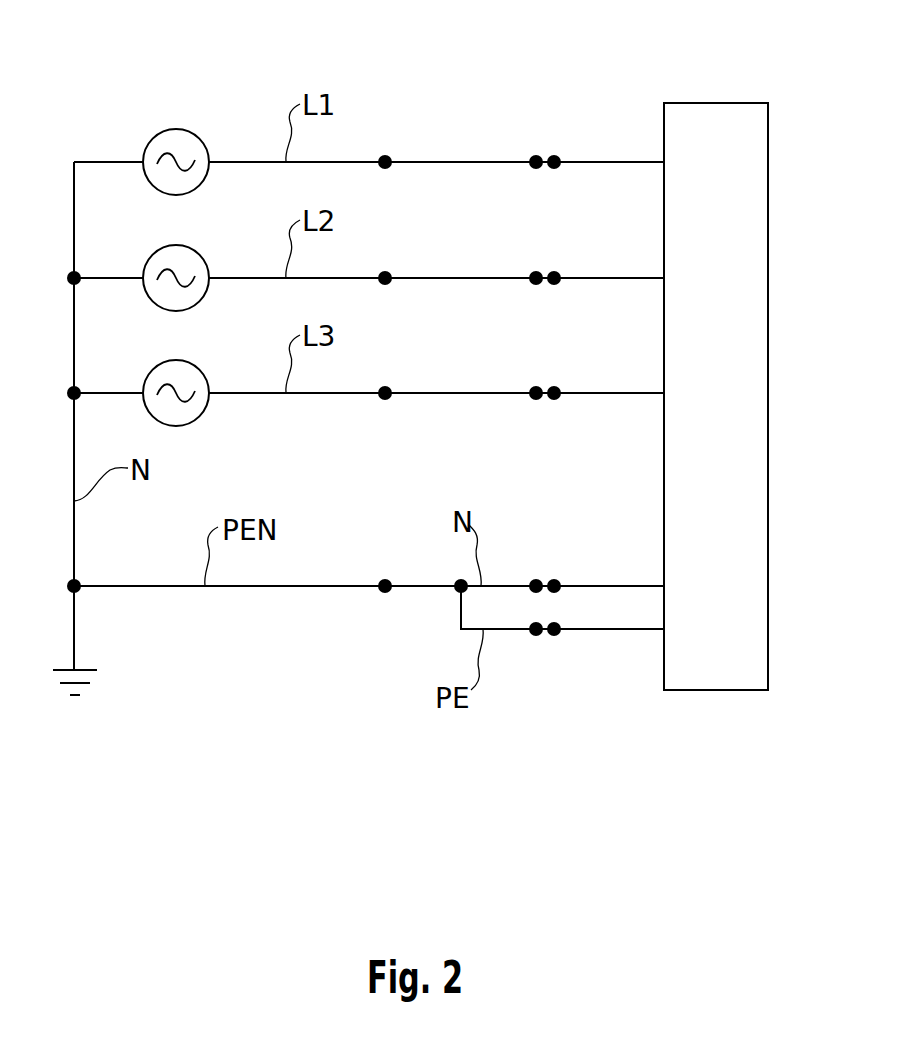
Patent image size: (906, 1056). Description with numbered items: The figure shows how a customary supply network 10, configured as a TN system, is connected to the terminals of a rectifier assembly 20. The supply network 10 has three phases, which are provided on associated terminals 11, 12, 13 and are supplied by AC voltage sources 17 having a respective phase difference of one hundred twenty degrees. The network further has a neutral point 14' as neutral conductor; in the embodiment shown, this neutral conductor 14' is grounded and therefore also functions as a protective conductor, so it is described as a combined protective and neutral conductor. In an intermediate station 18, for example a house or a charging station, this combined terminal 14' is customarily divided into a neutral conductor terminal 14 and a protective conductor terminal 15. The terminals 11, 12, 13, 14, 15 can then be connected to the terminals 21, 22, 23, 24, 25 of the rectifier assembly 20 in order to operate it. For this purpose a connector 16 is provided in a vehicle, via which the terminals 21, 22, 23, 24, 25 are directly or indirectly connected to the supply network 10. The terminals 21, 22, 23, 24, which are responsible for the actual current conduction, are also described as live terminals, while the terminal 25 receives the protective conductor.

The supply network 10 is at (387, 62).
The AC voltage source 17 is at (195, 132).
The intermediate station 18 is at (530, 62).
The terminal 11 is at (385, 155).
The terminal 12 is at (385, 271).
The terminal 13 is at (385, 386).
The neutral point 14' is at (363, 549).
The neutral conductor terminal 14 is at (517, 549).
The protective conductor terminal 15 is at (536, 636).
The connector 16 is at (555, 62).
The terminal 21 is at (554, 155).
The terminal 22 is at (554, 271).
The terminal 23 is at (554, 386).
The terminal 24 is at (554, 579).
The terminal 25 is at (554, 636).
The rectifier assembly 20 is at (733, 410).